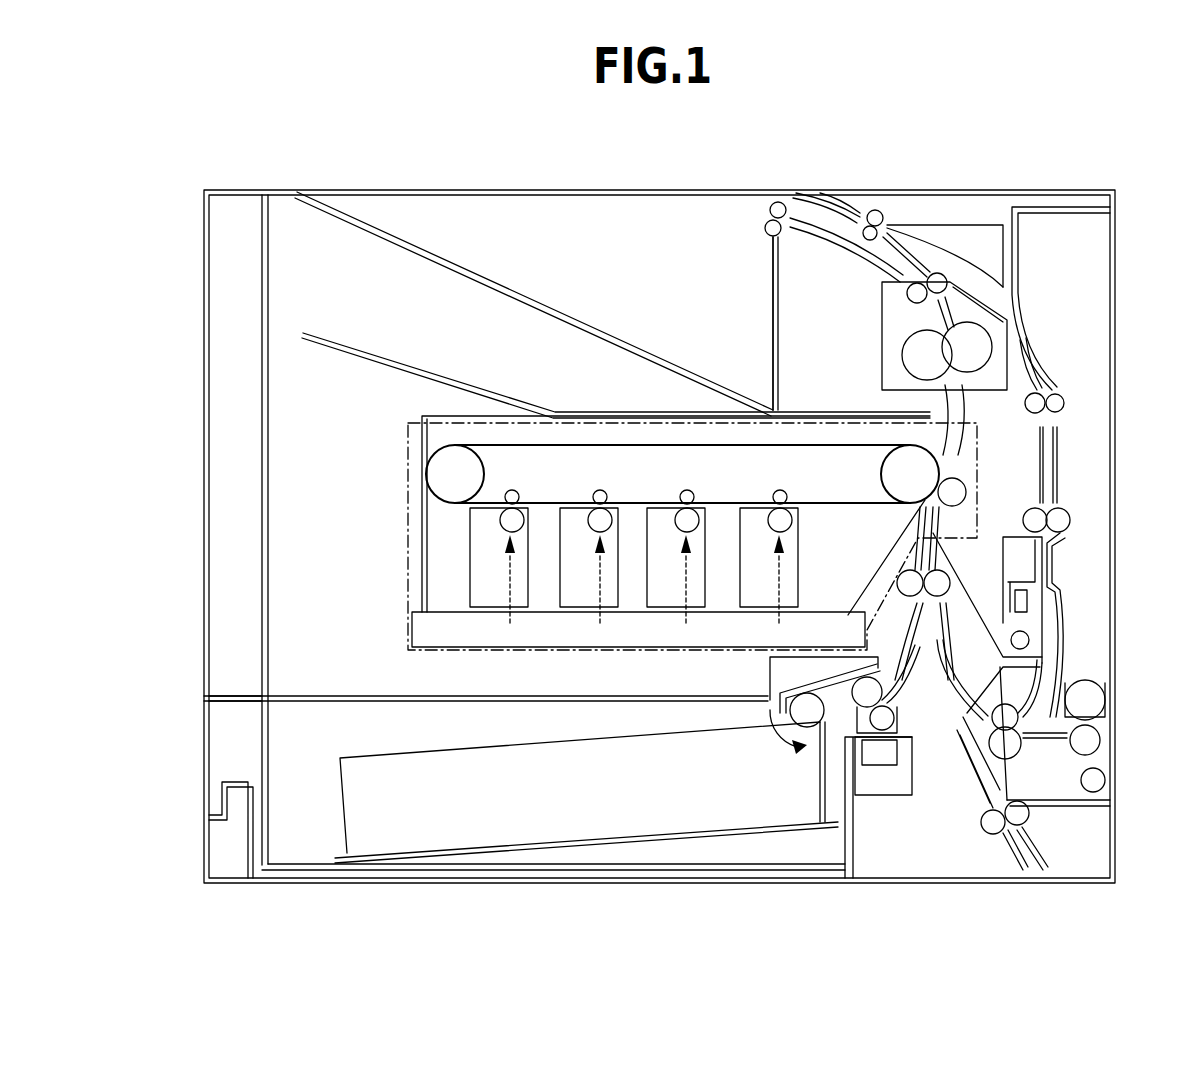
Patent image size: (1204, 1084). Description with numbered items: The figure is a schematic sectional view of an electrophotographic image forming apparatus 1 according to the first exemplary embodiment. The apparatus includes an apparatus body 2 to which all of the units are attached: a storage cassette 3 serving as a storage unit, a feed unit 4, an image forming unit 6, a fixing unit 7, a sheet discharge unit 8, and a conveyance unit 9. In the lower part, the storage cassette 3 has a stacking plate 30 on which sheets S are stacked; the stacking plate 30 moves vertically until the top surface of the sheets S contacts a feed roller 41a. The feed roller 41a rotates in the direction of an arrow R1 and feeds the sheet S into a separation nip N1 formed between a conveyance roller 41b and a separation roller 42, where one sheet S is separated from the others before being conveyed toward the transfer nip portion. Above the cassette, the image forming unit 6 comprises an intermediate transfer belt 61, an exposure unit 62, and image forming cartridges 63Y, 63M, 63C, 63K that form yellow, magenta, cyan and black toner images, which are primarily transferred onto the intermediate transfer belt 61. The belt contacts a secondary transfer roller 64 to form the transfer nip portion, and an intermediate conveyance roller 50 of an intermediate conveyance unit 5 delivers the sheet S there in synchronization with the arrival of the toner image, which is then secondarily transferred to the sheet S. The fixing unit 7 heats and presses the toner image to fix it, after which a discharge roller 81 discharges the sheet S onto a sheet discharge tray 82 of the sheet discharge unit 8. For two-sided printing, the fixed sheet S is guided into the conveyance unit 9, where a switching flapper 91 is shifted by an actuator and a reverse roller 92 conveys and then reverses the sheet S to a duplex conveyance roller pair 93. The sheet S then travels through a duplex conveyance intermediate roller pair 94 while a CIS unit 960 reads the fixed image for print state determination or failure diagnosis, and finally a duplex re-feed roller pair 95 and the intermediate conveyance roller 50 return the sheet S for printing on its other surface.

The image forming apparatus 1 is at (840, 134).
The apparatus body 2 is at (203, 245).
The storage cassette 3 is at (468, 862).
The feed unit 4 is at (888, 857).
The intermediate conveyance unit 5 is at (917, 548).
The image forming unit 6 is at (407, 462).
The fixing unit 7 is at (893, 312).
The sheet discharge unit 8 is at (557, 220).
The conveyance unit 9 is at (963, 275).
The stacking plate 30 is at (567, 853).
The feed roller 41a is at (810, 727).
The conveyance roller 41b is at (875, 735).
The separation roller 42 is at (895, 760).
The intermediate conveyance roller 50 is at (905, 583).
The intermediate transfer belt 61 is at (925, 472).
The exposure unit 62 is at (413, 630).
The image forming cartridge 63Y is at (490, 607).
The image forming cartridge 63M is at (575, 607).
The image forming cartridge 63C is at (668, 607).
The image forming cartridge 63K is at (760, 607).
The secondary transfer roller 64 is at (960, 491).
The discharge roller 81 is at (782, 202).
The sheet discharge tray 82 is at (457, 257).
The switching flapper 91 is at (926, 272).
The reverse roller 92 is at (875, 209).
The duplex conveyance roller pair 93 is at (1057, 403).
The duplex conveyance intermediate roller pair 94 is at (1062, 521).
The duplex re-feed roller pair 95 is at (1012, 745).
The CIS unit 960 is at (1027, 562).
The separation nip N1 is at (878, 705).
The arrow indicating rotation direction R1 is at (777, 743).
The sheet S is at (663, 817).